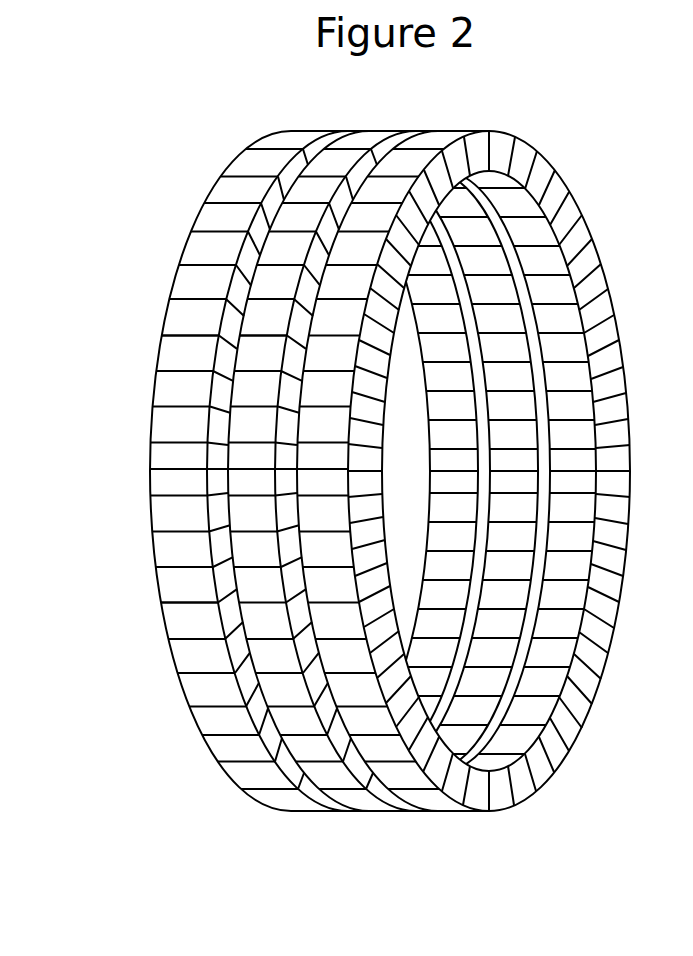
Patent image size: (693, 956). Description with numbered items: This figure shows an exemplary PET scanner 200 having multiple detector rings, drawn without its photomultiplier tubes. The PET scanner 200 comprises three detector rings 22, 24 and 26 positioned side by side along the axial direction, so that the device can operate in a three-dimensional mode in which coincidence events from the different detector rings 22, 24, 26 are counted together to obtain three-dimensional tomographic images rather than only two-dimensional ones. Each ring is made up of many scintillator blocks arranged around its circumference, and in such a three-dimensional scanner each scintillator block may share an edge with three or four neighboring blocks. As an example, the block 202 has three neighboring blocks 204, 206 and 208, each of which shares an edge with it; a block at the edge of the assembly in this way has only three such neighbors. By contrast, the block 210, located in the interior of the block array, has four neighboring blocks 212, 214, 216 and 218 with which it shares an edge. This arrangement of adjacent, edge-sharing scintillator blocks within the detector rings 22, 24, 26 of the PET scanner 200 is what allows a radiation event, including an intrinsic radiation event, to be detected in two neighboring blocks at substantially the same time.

The PET scanner 200 is at (590, 118).
The scintillator block 202 is at (192, 322).
The neighboring block 204 is at (186, 357).
The neighboring block 206 is at (203, 288).
The neighboring block 208 is at (270, 330).
The scintillator block 210 is at (265, 627).
The neighboring block 212 is at (197, 622).
The neighboring block 214 is at (260, 588).
The neighboring block 216 is at (337, 618).
The neighboring block 218 is at (275, 655).
The detector ring 22 is at (308, 825).
The detector ring 24 is at (374, 825).
The detector ring 26 is at (440, 825).